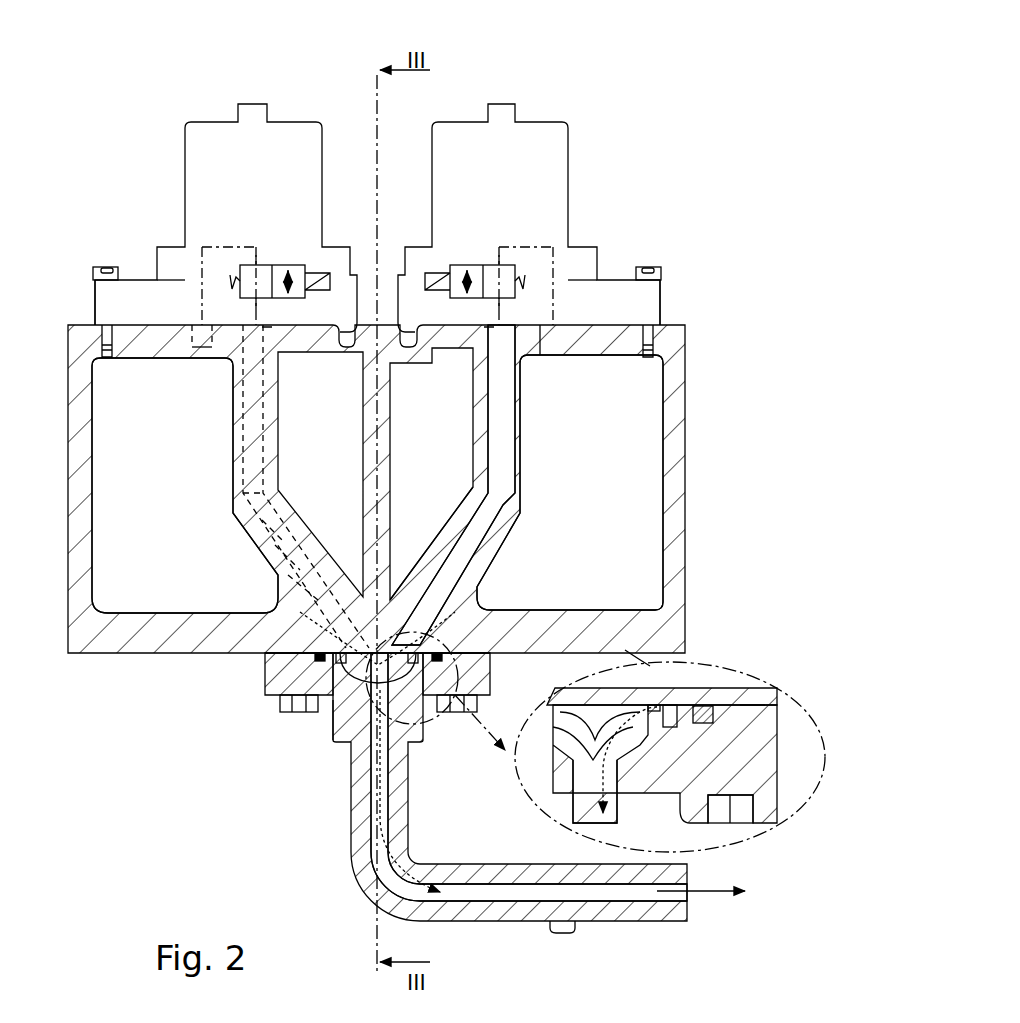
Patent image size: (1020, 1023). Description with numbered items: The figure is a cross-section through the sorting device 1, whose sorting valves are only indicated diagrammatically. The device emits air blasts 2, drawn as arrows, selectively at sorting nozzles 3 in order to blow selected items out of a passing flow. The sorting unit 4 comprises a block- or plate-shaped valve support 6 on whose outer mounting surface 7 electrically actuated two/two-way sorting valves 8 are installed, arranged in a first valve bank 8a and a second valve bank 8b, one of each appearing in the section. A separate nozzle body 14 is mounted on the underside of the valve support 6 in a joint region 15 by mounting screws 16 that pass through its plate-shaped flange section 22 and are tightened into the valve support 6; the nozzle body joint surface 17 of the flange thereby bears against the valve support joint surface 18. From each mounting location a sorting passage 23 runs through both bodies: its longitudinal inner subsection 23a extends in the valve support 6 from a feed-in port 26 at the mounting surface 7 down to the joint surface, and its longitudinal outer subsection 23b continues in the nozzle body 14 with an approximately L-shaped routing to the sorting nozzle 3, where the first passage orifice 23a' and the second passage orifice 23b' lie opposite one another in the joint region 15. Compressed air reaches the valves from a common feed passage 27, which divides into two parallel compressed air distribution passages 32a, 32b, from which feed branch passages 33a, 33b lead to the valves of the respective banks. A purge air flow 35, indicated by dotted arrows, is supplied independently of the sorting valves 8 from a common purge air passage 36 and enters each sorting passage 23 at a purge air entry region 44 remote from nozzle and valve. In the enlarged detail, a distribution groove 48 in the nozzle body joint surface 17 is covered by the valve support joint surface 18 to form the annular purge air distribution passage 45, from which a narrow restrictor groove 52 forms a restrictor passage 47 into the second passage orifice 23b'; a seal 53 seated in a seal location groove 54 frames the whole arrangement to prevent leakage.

The sorting device 1 is at (712, 145).
The air blasts 2 is at (707, 892).
The sorting nozzles 3 is at (678, 915).
The sorting unit 4 is at (52, 332).
The valve support 6 is at (405, 448).
The mounting surface 7 is at (152, 322).
The sorting valves 8 is at (205, 173).
The first valve bank 8a is at (550, 171).
The second valve bank 8b is at (225, 172).
The nozzle body 14 is at (355, 864).
The joint region 15 is at (282, 656).
The mounting screws 16 is at (300, 712).
The nozzle body joint surface 17 is at (742, 700).
The valve support joint surface 18 is at (765, 712).
The flange section 22 is at (493, 675).
The sorting passage 23 is at (408, 648).
The longitudinal inner subsection 23a is at (380, 486).
The first passage orifice 23a' is at (431, 543).
The longitudinal outer subsection 23b is at (529, 812).
The second passage orifice 23b' is at (331, 746).
The feed-in port 26 is at (262, 327).
The common feed passage 27 is at (377, 484).
The first compressed air distribution passage 32a is at (570, 482).
The second compressed air distribution passage 32b is at (185, 485).
The feed branch passage 33a is at (553, 348).
The feed branch passage 33b is at (200, 360).
The purge air flow 35 is at (428, 862).
The purge air passage 36 is at (655, 690).
The purge air entry region 44 is at (640, 650).
The purge air distribution passage 45 is at (338, 655).
The restrictor passage 47 is at (642, 760).
The distribution groove 48 is at (757, 714).
The restrictor groove 52 is at (662, 728).
The seal 53 is at (320, 650).
The seal location groove 54 is at (268, 683).